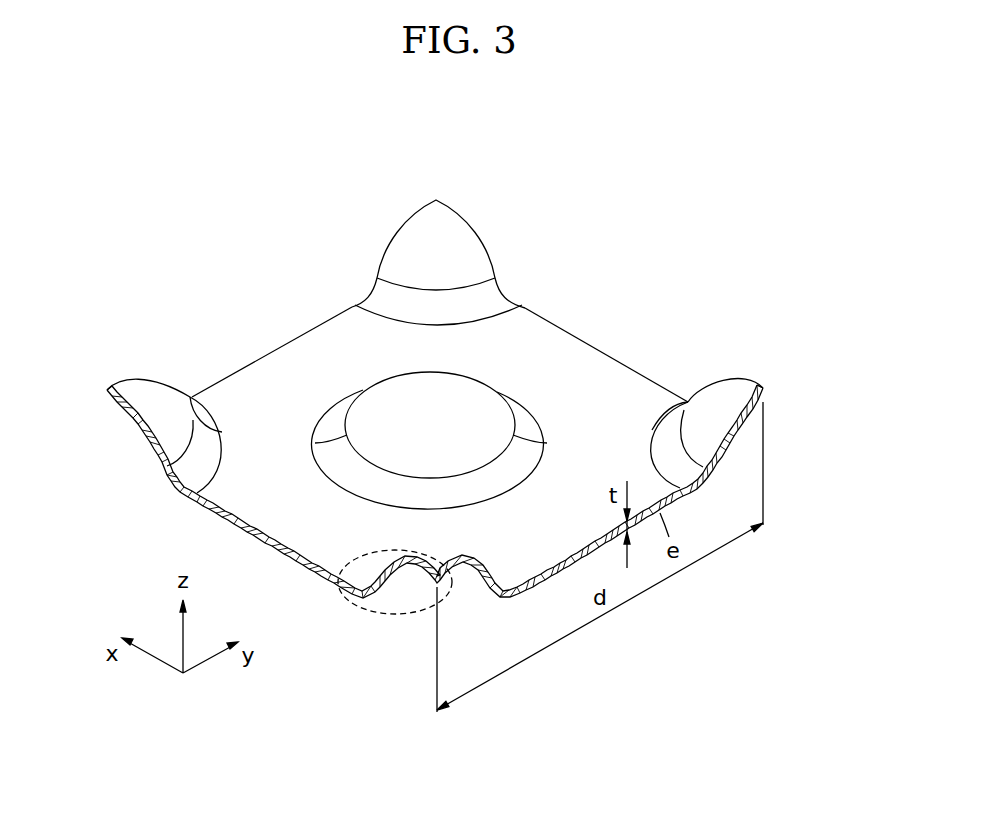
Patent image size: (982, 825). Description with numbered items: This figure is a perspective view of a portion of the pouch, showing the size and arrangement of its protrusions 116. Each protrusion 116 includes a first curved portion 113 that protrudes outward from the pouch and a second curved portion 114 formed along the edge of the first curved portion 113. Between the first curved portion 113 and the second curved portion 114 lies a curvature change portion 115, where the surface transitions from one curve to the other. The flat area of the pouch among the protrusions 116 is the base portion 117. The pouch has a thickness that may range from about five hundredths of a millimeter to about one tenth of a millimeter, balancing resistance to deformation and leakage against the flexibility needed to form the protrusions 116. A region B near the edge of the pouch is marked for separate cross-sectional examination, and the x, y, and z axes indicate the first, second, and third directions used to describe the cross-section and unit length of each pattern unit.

The first curved portion 113 is at (470, 393).
The second curved portion 114 is at (543, 447).
The curvature change portion 115 is at (530, 453).
The protrusion 116 is at (489, 375).
The base portion 117 is at (625, 405).
The region B is at (398, 615).